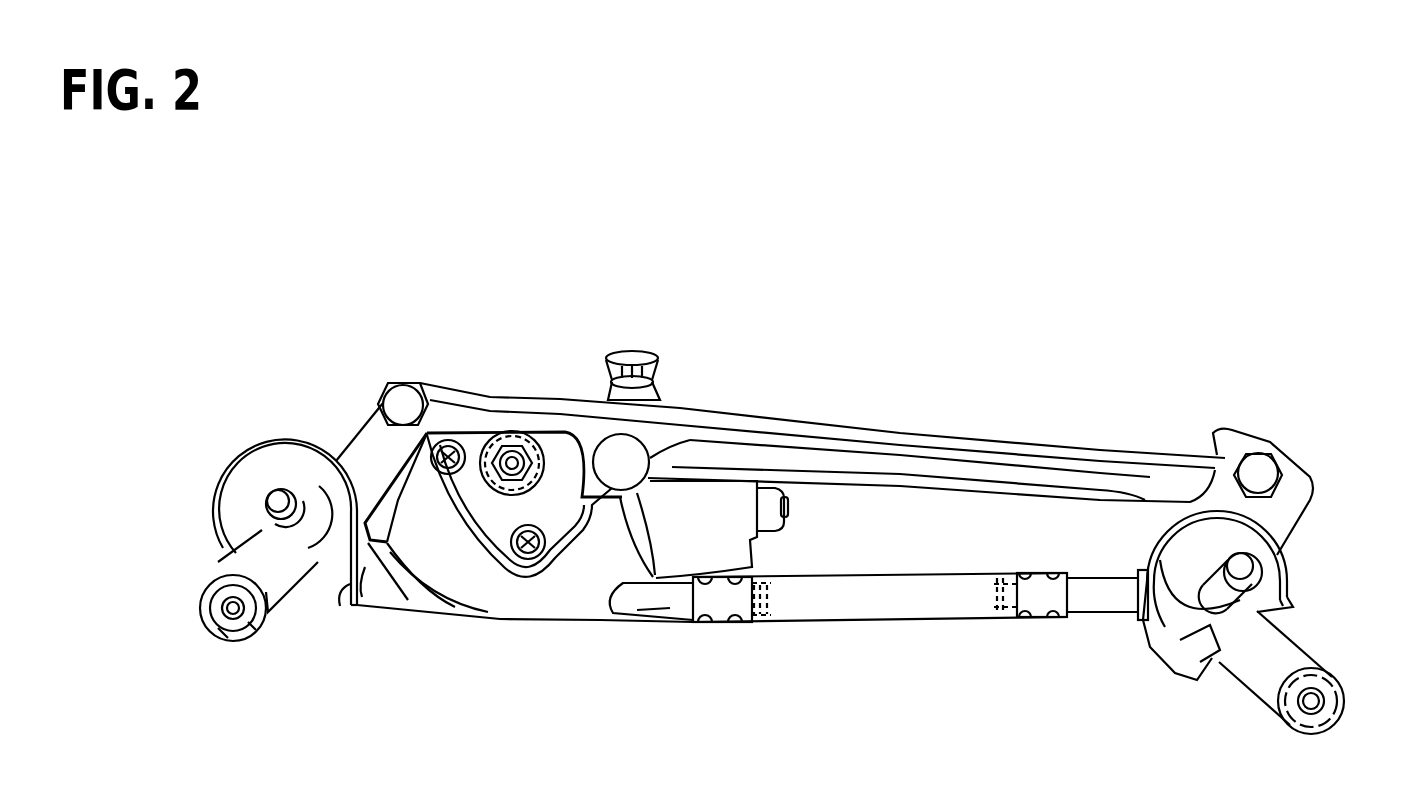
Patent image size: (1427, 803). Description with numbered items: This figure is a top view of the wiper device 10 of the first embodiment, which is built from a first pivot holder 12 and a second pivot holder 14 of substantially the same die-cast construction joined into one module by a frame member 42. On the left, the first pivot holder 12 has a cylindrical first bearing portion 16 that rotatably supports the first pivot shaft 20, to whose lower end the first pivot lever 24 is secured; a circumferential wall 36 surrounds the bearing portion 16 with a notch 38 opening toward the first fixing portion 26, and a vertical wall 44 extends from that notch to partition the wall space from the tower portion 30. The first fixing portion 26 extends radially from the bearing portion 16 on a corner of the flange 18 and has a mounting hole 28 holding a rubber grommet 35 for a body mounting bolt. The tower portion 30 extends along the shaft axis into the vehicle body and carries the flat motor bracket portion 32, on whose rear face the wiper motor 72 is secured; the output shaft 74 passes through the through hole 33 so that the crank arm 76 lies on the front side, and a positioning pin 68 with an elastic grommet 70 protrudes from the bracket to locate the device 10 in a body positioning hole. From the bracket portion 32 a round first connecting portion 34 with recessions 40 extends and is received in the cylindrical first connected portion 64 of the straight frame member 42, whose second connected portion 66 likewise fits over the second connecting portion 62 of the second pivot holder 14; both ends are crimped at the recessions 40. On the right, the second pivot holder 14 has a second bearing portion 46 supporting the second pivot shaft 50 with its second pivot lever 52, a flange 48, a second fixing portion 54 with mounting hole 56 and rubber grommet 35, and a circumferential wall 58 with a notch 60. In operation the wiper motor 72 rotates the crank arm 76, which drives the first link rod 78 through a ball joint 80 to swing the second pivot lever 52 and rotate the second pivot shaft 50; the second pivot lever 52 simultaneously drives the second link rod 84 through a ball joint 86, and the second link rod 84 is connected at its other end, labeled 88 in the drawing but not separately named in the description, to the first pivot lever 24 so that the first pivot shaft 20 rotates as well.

The wiper device 10 is at (838, 338).
The first pivot holder 12 is at (220, 460).
The second pivot holder 14 is at (1298, 576).
The first bearing portion 16 is at (300, 590).
The flange 18 is at (268, 474).
The first pivot shaft 20 is at (284, 490).
The first pivot lever 24 is at (373, 436).
The first fixing portion 26 is at (202, 614).
The mounting hole 28 is at (229, 628).
The tower portion 30 is at (388, 597).
The motor bracket portion 32 is at (515, 598).
The through hole 33 is at (490, 515).
The first connecting portion 34 is at (763, 628).
The rubber grommet 35 is at (249, 620).
The circumferential wall 36 is at (216, 520).
The notch 38 is at (342, 584).
The recessions 40 is at (718, 574).
The frame member 42 is at (875, 622).
The vertical wall 44 is at (368, 583).
The second bearing portion 46 is at (1202, 605).
The flange 48 is at (1178, 553).
The second pivot shaft 50 is at (1250, 562).
The second pivot lever 52 is at (1290, 453).
The second fixing portion 54 is at (1292, 733).
The mounting hole 56 is at (1331, 691).
The circumferential wall 58 is at (1186, 663).
The notch 60 is at (1292, 604).
The second connecting portion 62 is at (988, 612).
The first connected portion 64 is at (683, 600).
The second connected portion 66 is at (1060, 602).
The positioning pin 68 is at (632, 354).
The elastic grommet 70 is at (655, 360).
The wiper motor 72 is at (700, 503).
The output shaft 74 is at (512, 458).
The crank arm 76 is at (589, 492).
The first link rod 78 is at (875, 489).
The ball joint 80 is at (620, 458).
The second link rod 84 is at (905, 437).
The ball joint 86 is at (1255, 471).
The ball joint boss 88 is at (403, 400).